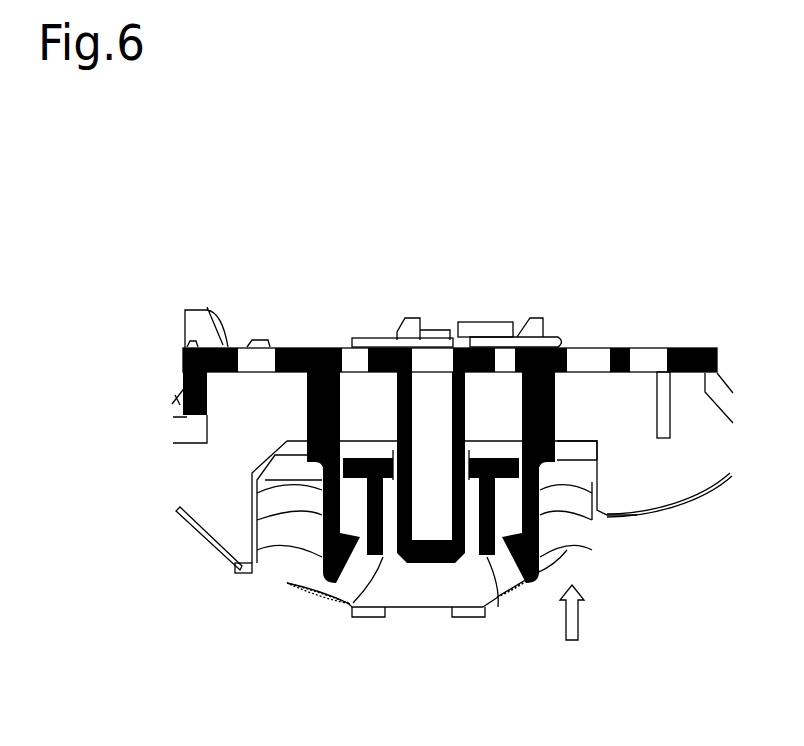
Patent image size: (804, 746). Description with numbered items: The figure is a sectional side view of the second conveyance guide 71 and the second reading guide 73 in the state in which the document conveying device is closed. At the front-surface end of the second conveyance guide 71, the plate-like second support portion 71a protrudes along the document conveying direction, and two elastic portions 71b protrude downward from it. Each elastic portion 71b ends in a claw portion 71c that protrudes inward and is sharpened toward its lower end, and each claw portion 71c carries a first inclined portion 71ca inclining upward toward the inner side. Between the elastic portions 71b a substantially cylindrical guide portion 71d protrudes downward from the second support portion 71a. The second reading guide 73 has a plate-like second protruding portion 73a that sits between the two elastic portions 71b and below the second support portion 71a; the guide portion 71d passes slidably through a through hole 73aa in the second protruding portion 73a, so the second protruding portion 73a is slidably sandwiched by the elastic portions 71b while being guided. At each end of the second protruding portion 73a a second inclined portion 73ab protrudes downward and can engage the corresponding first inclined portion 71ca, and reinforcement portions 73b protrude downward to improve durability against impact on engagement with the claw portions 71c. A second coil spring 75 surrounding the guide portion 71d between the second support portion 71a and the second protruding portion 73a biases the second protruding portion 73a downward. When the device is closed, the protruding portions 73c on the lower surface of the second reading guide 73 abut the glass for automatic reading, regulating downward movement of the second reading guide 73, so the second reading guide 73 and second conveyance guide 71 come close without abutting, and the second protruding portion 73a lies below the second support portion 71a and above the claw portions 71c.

The second conveyance guide 71 is at (210, 462).
The second support portion 71a is at (185, 310).
The elastic portion 71b is at (293, 347).
The claw portion 71c is at (240, 568).
The first inclined portion 71ca is at (280, 513).
The guide portion 71d is at (433, 383).
The second reading guide 73 is at (278, 563).
The second protruding portion 73a is at (557, 428).
The through hole 73aa is at (387, 470).
The second inclined portion 73ab is at (272, 476).
The reinforcement portion 73b is at (343, 603).
The protruding portion 73c is at (367, 615).
The second coil spring 75 is at (378, 408).